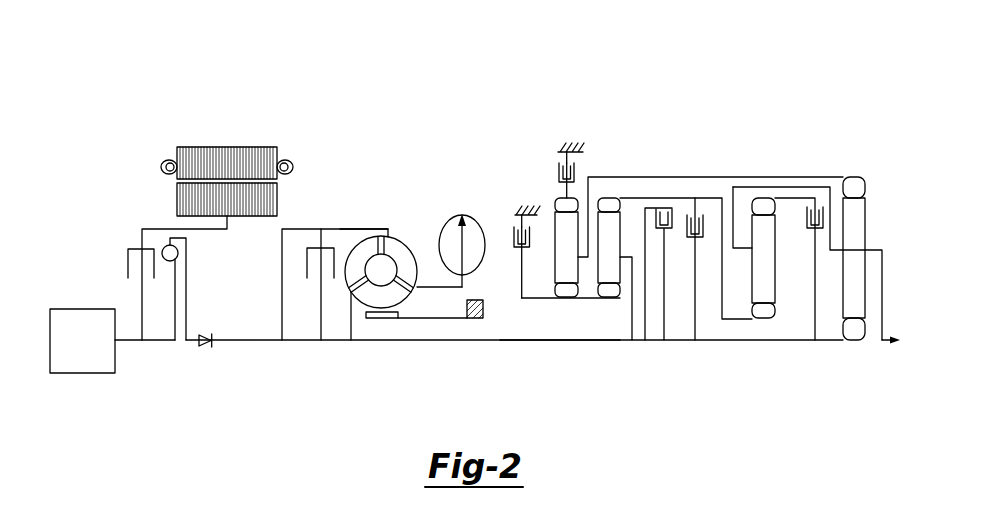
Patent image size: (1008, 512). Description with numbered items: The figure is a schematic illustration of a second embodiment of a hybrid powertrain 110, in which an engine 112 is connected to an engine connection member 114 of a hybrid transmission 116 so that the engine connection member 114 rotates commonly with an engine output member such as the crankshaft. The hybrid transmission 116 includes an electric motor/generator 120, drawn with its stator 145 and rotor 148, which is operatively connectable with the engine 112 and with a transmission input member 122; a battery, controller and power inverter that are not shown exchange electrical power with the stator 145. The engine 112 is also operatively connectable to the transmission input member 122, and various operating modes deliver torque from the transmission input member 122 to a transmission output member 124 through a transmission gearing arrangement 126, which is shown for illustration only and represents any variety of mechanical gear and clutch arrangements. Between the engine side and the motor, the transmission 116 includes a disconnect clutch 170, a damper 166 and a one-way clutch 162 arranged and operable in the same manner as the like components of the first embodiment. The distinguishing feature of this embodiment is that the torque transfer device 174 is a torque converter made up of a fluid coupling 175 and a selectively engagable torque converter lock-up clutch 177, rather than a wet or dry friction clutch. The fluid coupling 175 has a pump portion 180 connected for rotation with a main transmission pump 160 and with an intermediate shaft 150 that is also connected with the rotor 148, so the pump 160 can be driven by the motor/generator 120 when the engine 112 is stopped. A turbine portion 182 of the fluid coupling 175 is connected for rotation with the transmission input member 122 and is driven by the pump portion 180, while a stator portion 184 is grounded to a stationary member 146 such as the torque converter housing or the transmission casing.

The hybrid powertrain 110 is at (564, 105).
The engine 112 is at (93, 352).
The engine connection member 114 is at (125, 342).
The hybrid transmission 116 is at (449, 132).
The electric motor/generator 120 is at (249, 114).
The transmission input member 122 is at (550, 341).
The transmission output member 124 is at (882, 345).
The transmission gearing arrangement 126 is at (786, 154).
The stator 145 is at (185, 155).
The stationary member 146 is at (477, 320).
The rotor 148 is at (177, 198).
The intermediate shaft 150 is at (258, 343).
The main transmission pump 160 is at (478, 232).
The one-way clutch 162 is at (205, 360).
The damper 166 is at (167, 278).
The disconnect clutch 170 is at (118, 268).
The torque transfer device 174 is at (369, 213).
The fluid coupling 175 is at (404, 230).
The torque converter lock-up clutch 177 is at (305, 297).
The pump portion 180 is at (417, 258).
The turbine portion 182 is at (341, 297).
The stator portion 184 is at (410, 312).